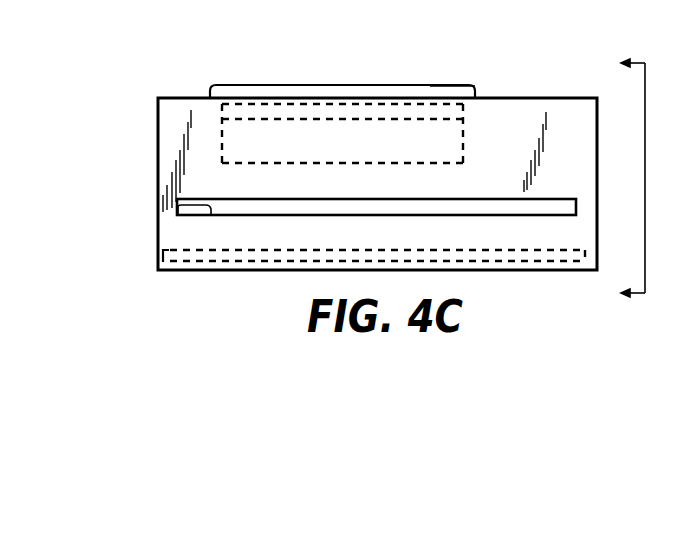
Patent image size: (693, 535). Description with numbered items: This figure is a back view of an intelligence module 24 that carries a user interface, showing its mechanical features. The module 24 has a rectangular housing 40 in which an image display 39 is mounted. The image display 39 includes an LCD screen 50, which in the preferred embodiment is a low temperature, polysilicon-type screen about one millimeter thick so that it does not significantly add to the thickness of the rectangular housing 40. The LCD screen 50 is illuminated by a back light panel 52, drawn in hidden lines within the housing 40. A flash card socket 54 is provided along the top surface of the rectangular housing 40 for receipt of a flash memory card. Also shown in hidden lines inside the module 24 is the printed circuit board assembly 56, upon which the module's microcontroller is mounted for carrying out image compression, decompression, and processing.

The intelligence module 24 is at (200, 68).
The image display 39 is at (325, 86).
The rectangular housing 40 is at (158, 161).
The LCD screen 50 is at (433, 92).
The back light panel 52 is at (453, 143).
The flash card socket 54 is at (178, 209).
The printed circuit board assembly 56 is at (150, 259).